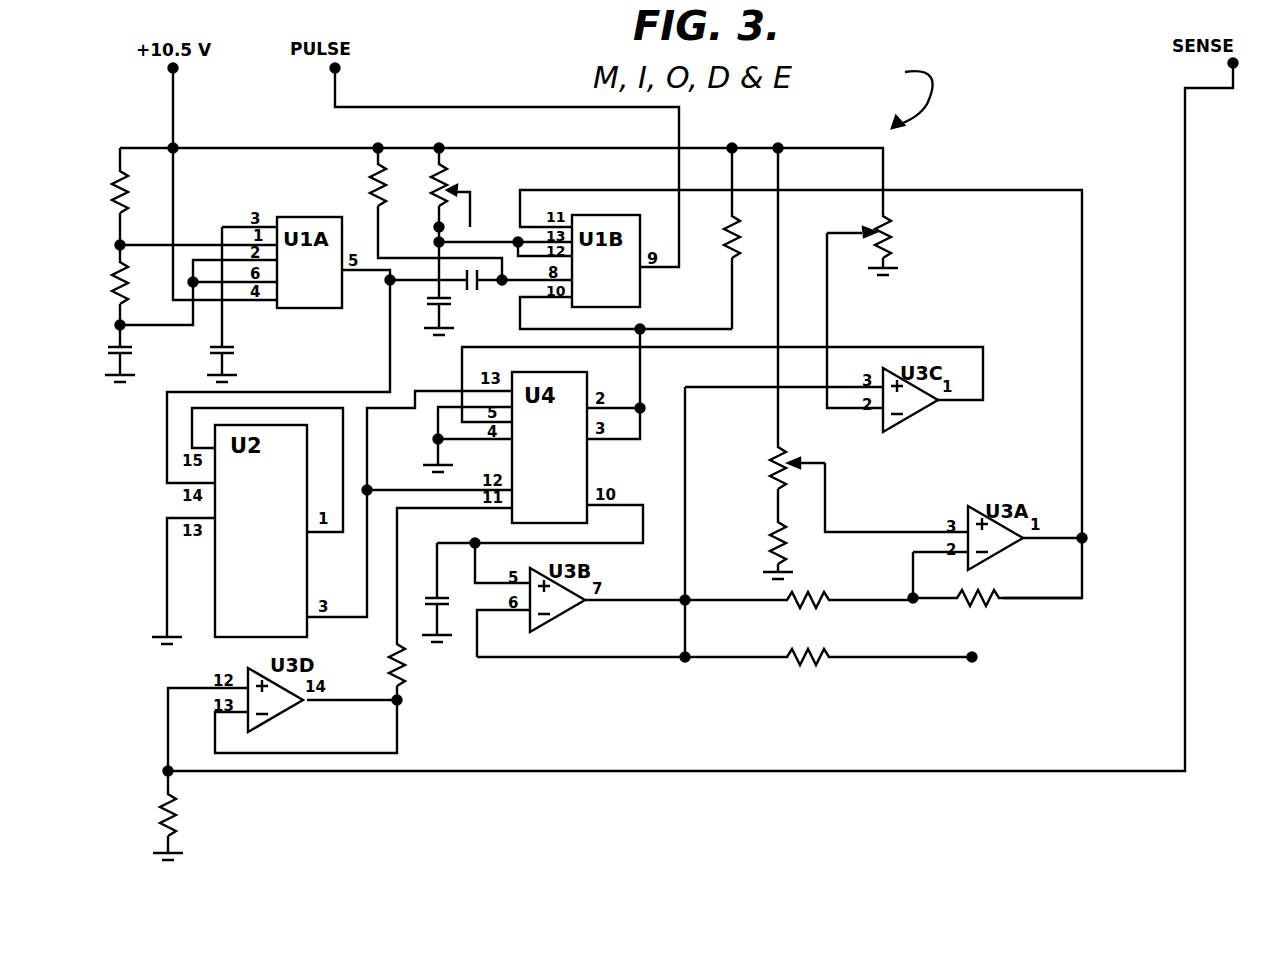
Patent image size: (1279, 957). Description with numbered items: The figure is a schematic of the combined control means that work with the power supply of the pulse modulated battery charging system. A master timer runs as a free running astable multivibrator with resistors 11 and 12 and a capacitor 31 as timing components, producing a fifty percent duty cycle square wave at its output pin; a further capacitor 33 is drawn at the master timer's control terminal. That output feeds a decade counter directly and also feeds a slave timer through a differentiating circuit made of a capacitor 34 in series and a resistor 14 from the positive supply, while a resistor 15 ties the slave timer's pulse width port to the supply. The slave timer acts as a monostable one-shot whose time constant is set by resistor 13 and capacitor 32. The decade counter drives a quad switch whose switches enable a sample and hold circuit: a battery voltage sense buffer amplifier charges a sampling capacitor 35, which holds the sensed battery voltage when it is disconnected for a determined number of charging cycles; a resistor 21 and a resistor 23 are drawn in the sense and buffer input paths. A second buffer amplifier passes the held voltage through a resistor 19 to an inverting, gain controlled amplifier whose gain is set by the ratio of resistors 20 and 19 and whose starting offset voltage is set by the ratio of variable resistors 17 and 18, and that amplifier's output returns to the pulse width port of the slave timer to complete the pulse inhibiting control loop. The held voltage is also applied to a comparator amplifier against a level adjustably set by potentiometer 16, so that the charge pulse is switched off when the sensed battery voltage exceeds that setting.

The resistor 11 is at (104, 196).
The resistor 12 is at (103, 285).
The resistor 13 is at (456, 195).
The resistor 14 is at (415, 214).
The resistor 15 is at (715, 238).
The potentiometer 16 is at (879, 243).
The variable resistor 17 is at (780, 480).
The variable resistor 18 is at (764, 548).
The resistor 19 is at (799, 613).
The resistor 20 is at (997, 610).
The resistor 21 is at (412, 670).
The resistor 23 is at (189, 815).
The capacitor 31 is at (136, 353).
The capacitor 32 is at (424, 288).
The capacitor 33 is at (242, 304).
The capacitor 34 is at (477, 293).
The sampling capacitor 35 is at (425, 592).